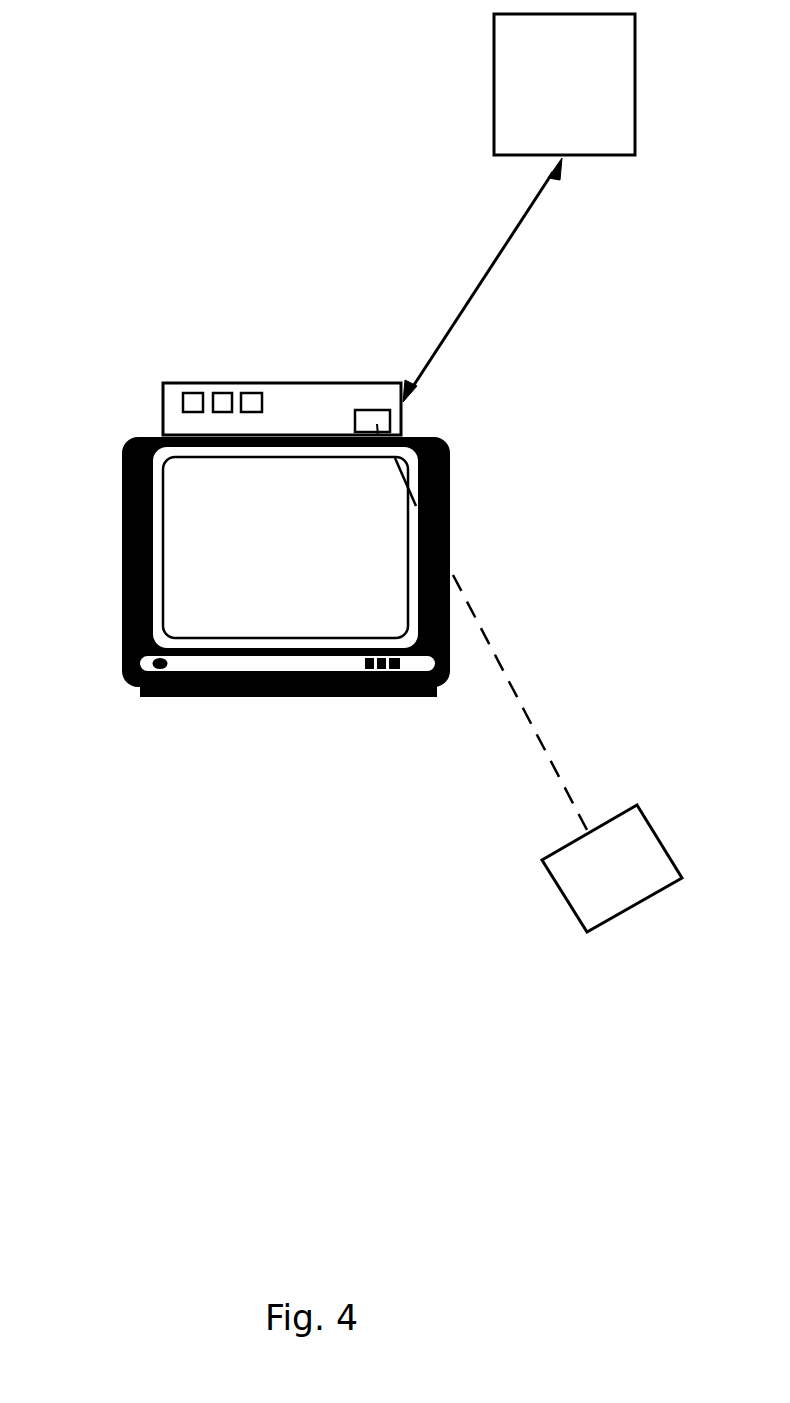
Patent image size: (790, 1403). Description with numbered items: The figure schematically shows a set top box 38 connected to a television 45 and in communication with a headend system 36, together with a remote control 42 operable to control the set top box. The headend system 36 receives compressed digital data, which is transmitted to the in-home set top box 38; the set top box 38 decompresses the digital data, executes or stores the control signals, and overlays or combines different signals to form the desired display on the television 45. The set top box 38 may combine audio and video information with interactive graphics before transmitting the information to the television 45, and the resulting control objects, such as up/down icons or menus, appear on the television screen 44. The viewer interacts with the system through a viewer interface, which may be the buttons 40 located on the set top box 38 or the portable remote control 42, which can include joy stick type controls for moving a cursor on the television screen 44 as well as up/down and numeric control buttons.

The headend system 36 is at (621, 84).
The set top box 38 is at (297, 383).
The buttons 40 is at (250, 393).
The remote control 42 is at (560, 895).
The television screen 44 is at (195, 533).
The television 45 is at (452, 483).